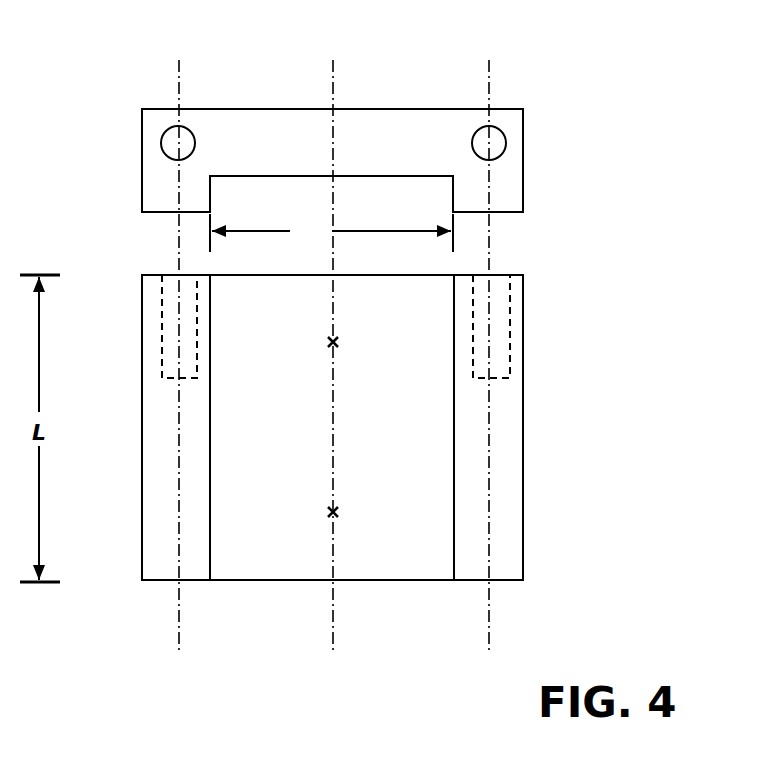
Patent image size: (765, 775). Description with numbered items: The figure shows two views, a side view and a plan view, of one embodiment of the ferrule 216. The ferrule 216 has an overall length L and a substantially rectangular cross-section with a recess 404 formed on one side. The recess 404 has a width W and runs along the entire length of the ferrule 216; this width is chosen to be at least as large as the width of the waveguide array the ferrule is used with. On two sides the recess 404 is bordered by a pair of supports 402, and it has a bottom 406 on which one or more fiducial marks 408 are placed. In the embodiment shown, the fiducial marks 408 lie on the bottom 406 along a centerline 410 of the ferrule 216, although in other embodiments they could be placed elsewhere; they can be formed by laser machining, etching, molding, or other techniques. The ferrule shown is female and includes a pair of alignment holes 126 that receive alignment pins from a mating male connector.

The alignment holes 126 is at (185, 143).
The ferrule 216 is at (534, 138).
The supports 402 is at (150, 200).
The recess 404 is at (331, 219).
The bottom 406 is at (365, 177).
The fiducial marks 408 is at (341, 342).
The centerline 410 is at (335, 622).